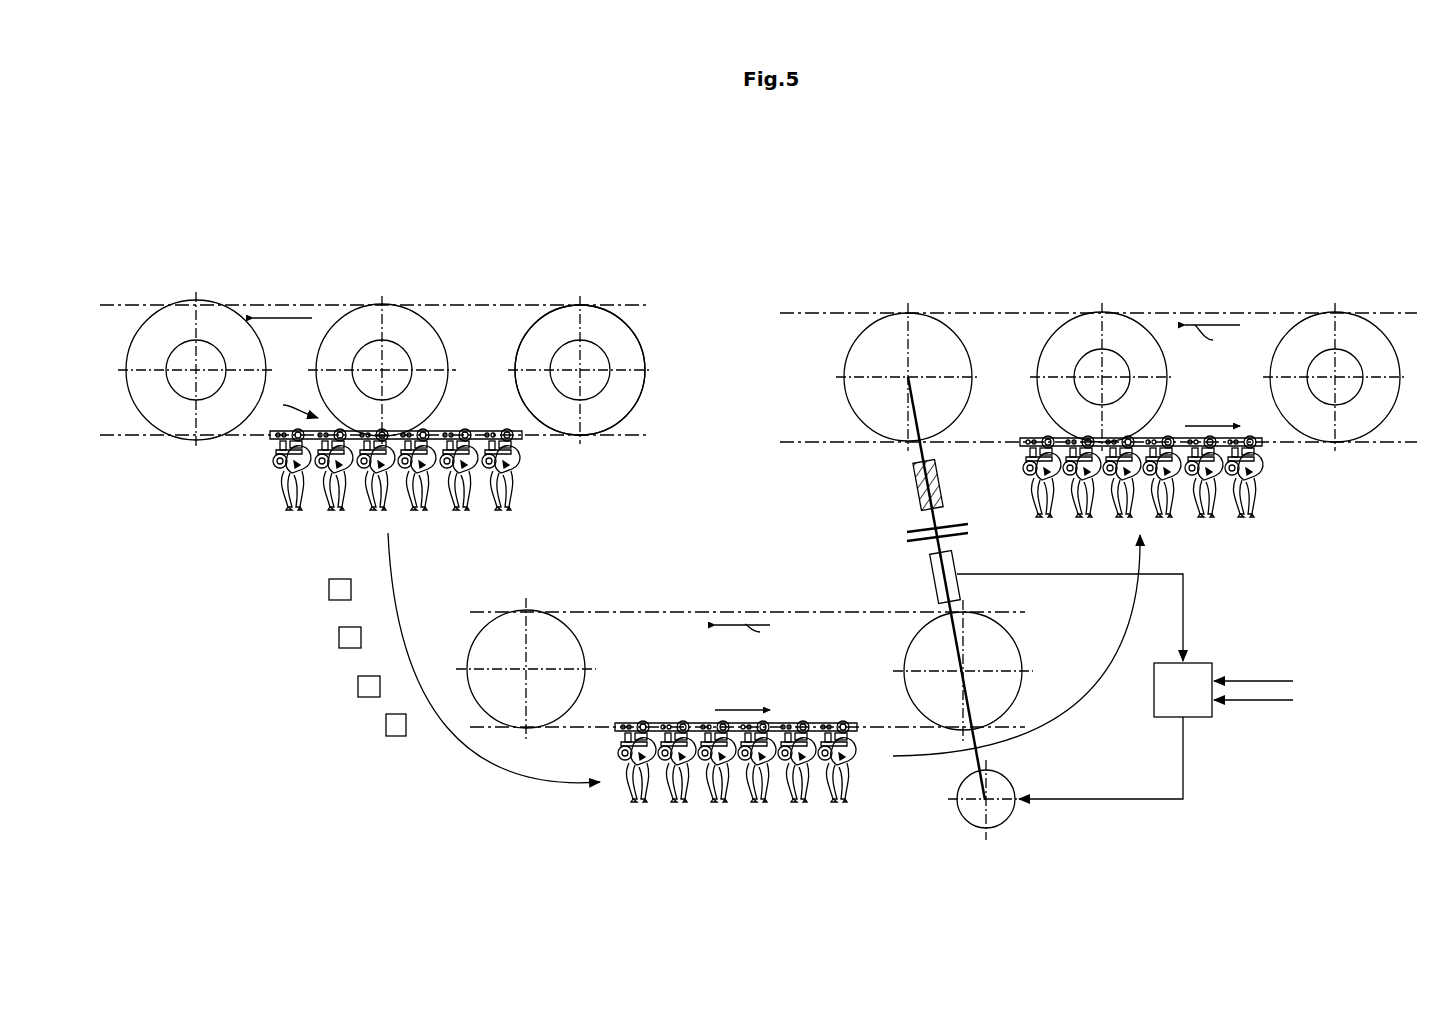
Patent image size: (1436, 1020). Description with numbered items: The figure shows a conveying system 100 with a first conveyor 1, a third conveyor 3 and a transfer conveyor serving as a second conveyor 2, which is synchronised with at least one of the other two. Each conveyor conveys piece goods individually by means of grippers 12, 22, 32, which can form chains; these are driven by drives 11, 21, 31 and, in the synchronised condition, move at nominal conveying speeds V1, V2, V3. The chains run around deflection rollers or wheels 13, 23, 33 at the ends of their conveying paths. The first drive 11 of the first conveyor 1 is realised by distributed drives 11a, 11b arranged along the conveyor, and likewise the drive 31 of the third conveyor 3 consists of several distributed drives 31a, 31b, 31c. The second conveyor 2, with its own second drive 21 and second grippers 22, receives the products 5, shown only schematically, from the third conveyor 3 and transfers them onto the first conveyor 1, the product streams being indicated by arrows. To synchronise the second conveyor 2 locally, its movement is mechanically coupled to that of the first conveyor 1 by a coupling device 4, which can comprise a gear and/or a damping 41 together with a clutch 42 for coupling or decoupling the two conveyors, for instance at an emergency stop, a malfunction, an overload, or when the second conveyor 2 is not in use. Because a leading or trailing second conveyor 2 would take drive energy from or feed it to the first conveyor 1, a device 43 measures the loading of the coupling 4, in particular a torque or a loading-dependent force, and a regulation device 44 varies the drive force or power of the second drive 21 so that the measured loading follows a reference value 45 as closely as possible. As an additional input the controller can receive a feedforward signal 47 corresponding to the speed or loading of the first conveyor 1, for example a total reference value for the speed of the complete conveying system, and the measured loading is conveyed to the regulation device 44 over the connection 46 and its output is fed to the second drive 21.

The conveying system 100 is at (503, 193).
The first conveyor 1 is at (983, 268).
The second conveyor 2 is at (740, 578).
The third conveyor 3 is at (303, 247).
The coupling device 4 is at (855, 510).
The products 5 is at (389, 730).
The first drive 11 is at (1320, 350).
The distributed drive 11a is at (1091, 350).
The distributed drive 11b is at (1345, 350).
The grippers 12 is at (1170, 516).
The deflection roller 13 is at (848, 342).
The second drive 21 is at (1003, 826).
The second grippers 22 is at (722, 805).
The deflection roller 23 is at (1010, 636).
The drive 31 is at (553, 338).
The distributed drive 31a is at (607, 352).
The distributed drive 31b is at (415, 365).
The distributed drive 31c is at (228, 362).
The grippers 32 is at (428, 512).
The deflection roller 33 is at (622, 424).
The damping 41 is at (915, 488).
The clutch 42 is at (912, 540).
The device for measuring a loading 43 is at (948, 558).
The regulation device 44 is at (1200, 668).
The reference value 45 is at (1255, 700).
The signal line 46 is at (1183, 607).
The feedforward signal 47 is at (1255, 681).
The nominal conveying speed V1 is at (1216, 342).
The nominal conveying speed V2 is at (765, 638).
The nominal conveying speed V3 is at (291, 409).